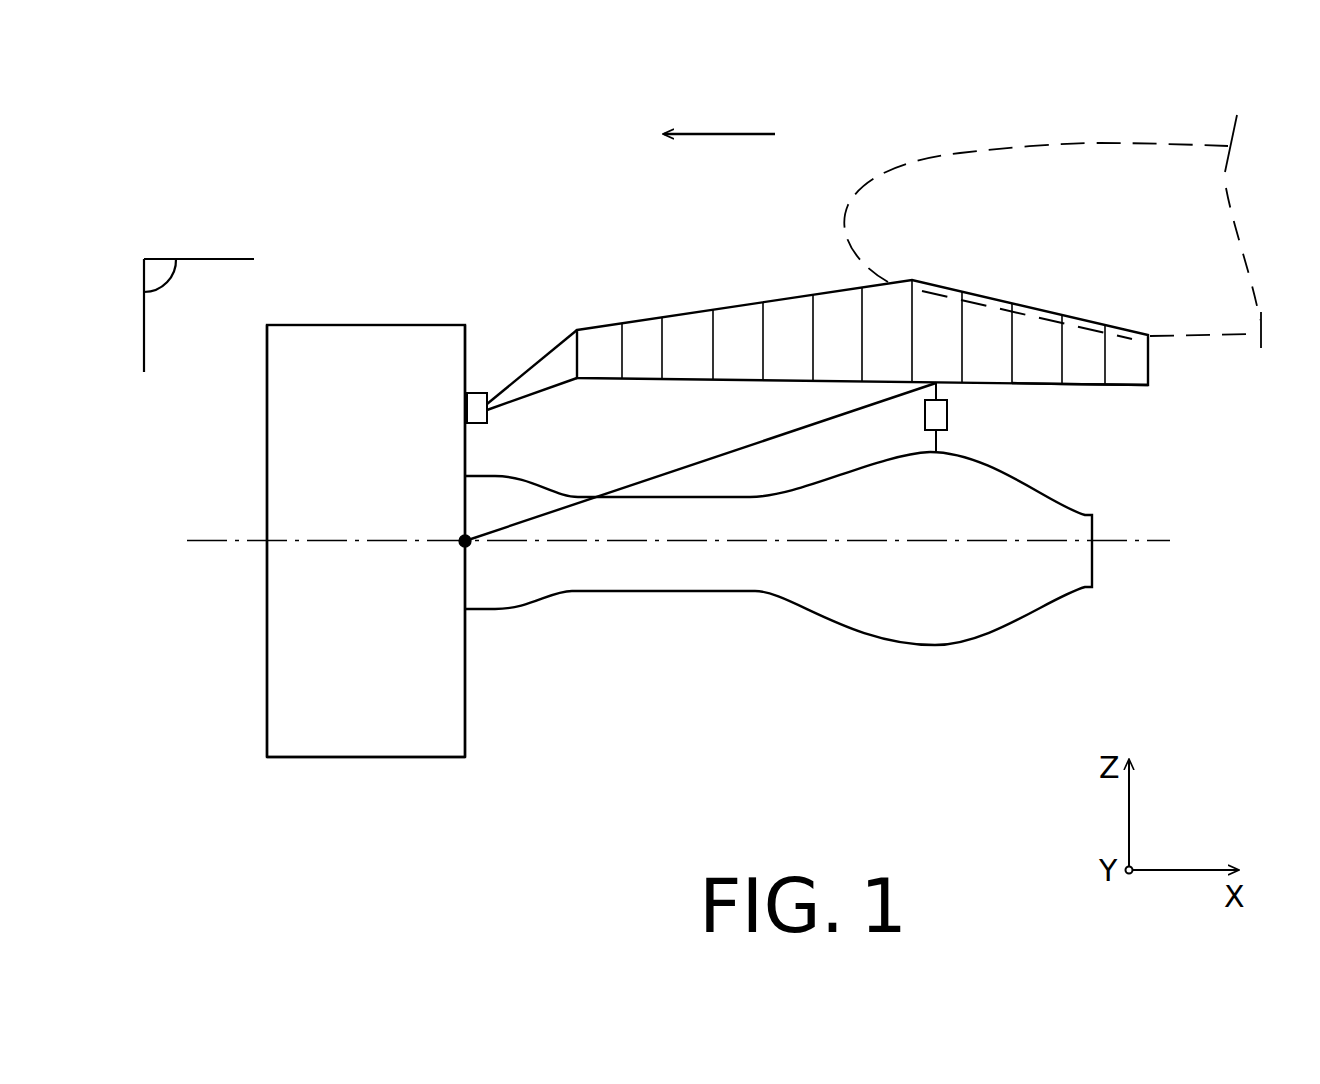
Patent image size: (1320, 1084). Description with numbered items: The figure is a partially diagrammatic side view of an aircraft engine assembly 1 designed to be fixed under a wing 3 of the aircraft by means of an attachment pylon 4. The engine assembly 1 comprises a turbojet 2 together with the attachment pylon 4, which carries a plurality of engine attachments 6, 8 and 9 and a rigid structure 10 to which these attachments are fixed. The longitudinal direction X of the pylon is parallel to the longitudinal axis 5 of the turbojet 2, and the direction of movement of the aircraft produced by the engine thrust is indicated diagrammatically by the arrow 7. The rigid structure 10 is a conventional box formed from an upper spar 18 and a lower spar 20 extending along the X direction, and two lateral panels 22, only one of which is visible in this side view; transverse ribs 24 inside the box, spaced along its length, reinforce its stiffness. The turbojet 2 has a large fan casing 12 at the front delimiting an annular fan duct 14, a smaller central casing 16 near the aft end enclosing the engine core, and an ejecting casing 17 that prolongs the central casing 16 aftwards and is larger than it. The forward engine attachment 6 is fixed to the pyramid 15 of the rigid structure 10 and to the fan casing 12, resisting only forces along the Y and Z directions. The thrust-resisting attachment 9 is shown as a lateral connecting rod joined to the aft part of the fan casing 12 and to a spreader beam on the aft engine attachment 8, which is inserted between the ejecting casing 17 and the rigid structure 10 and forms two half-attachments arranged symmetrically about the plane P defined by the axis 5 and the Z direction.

The aircraft engine assembly 1 is at (443, 265).
The turbojet 2 is at (403, 762).
The wing 3 is at (925, 167).
The attachment pylon 4 is at (673, 292).
The longitudinal axis 5 is at (207, 543).
The forward engine attachment 6 is at (481, 386).
The arrow 7 is at (710, 134).
The aft engine attachment 8 is at (947, 412).
The thrust-resisting attachment 9 is at (744, 444).
The rigid structure 10 is at (766, 300).
The fan casing 12 is at (320, 728).
The annular fan duct 14 is at (420, 692).
The pyramid 15 is at (538, 357).
The central casing 16 is at (660, 592).
The ejecting casing 17 is at (935, 648).
The upper spar 18 is at (1045, 312).
The lower spar 20 is at (1052, 385).
The lateral panel 22 is at (1080, 355).
The transverse ribs 24 is at (914, 338).
The plane P is at (166, 266).